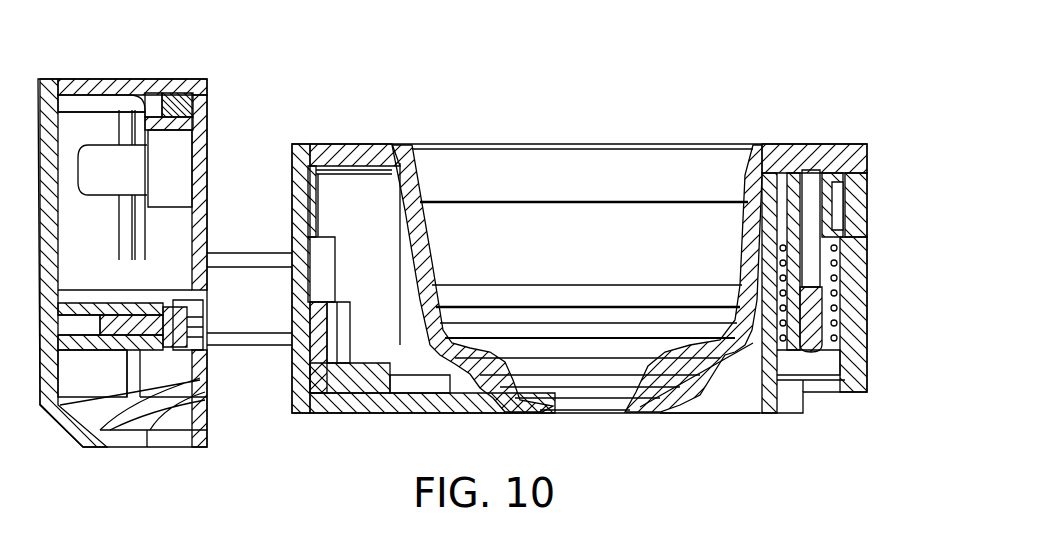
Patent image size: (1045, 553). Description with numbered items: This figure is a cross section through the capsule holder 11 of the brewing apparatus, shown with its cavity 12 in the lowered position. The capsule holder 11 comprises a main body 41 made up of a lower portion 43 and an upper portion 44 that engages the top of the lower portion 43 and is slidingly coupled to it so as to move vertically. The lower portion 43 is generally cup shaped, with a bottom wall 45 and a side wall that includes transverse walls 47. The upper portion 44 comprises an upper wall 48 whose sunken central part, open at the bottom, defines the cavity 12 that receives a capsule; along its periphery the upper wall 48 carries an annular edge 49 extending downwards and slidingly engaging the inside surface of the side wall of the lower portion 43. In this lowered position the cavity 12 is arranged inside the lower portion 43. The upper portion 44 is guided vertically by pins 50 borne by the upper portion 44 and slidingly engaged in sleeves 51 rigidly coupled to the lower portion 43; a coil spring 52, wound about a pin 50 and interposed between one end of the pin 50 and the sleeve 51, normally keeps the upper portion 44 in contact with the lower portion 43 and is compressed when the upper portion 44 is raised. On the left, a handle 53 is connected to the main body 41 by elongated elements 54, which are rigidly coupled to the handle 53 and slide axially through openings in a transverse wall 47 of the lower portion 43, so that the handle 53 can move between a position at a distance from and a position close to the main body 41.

The capsule holder 11 is at (755, 82).
The cavity 12 is at (440, 232).
The main body 41 is at (343, 116).
The lower portion 43 is at (875, 335).
The upper portion 44 is at (829, 143).
The bottom wall 45 is at (700, 415).
The transverse walls 47 is at (297, 245).
The upper wall 48 is at (372, 155).
The annular edge 49 is at (305, 182).
The pins 50 is at (848, 192).
The sleeves 51 is at (776, 382).
The coil springs 52 is at (838, 300).
The handle 53 is at (89, 75).
The elongated elements 54 is at (248, 318).